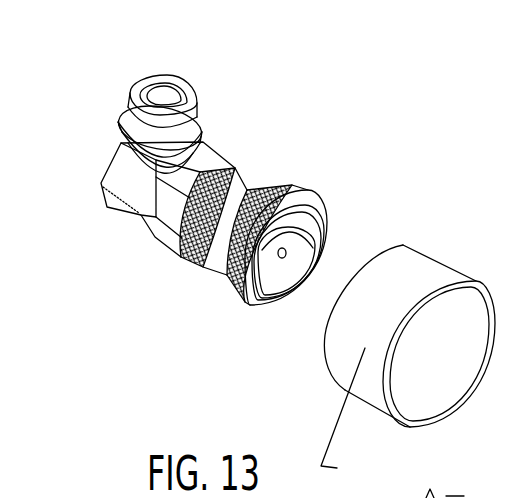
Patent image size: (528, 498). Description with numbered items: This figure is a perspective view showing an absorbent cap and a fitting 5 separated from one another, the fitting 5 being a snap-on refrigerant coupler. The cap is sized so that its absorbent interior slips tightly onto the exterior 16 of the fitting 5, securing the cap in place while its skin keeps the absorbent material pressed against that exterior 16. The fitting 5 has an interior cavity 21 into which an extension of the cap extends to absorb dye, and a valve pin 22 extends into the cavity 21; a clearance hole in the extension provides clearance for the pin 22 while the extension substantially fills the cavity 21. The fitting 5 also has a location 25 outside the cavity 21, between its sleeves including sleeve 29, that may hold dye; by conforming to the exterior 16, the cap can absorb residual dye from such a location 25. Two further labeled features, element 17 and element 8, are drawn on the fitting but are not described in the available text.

The fitting 5 is at (236, 145).
The exterior of the fitting 16 is at (235, 305).
The front face of coupling nut 17 is at (325, 212).
The location 25 is at (325, 227).
The sleeve 29 is at (287, 220).
The interior cavity 21 is at (275, 288).
The insulator 8 is at (287, 276).
The valve pin 22 is at (297, 251).